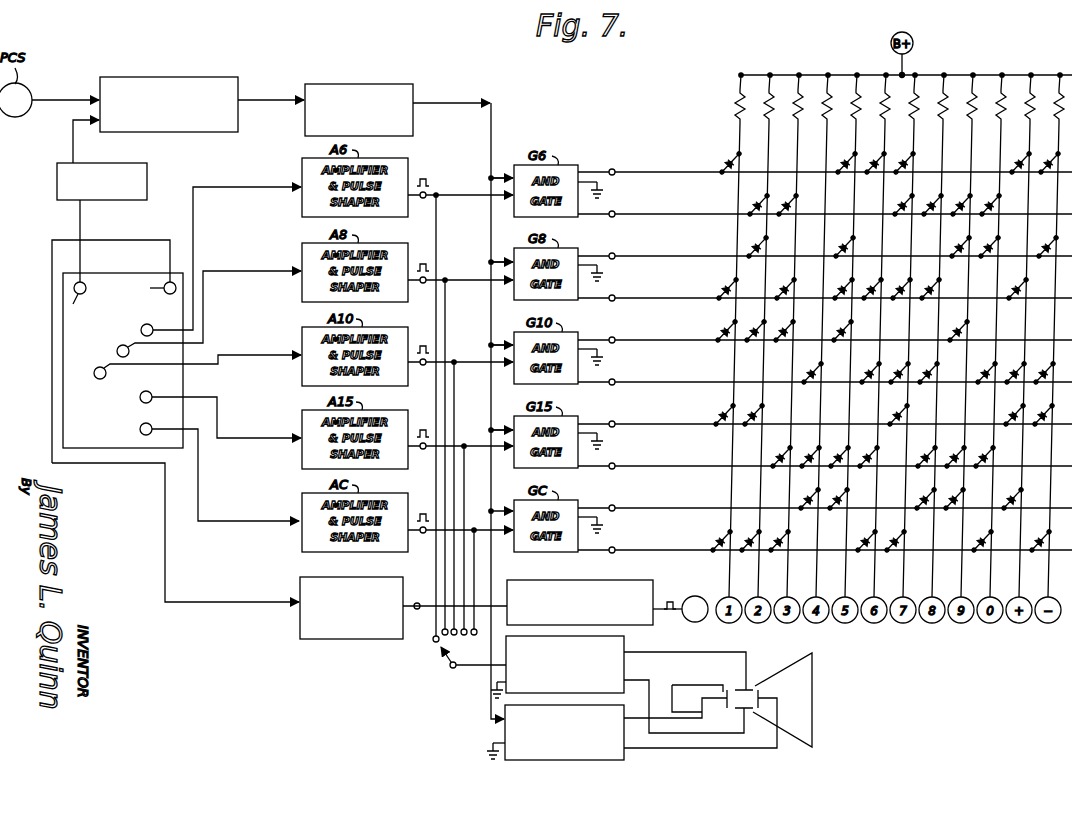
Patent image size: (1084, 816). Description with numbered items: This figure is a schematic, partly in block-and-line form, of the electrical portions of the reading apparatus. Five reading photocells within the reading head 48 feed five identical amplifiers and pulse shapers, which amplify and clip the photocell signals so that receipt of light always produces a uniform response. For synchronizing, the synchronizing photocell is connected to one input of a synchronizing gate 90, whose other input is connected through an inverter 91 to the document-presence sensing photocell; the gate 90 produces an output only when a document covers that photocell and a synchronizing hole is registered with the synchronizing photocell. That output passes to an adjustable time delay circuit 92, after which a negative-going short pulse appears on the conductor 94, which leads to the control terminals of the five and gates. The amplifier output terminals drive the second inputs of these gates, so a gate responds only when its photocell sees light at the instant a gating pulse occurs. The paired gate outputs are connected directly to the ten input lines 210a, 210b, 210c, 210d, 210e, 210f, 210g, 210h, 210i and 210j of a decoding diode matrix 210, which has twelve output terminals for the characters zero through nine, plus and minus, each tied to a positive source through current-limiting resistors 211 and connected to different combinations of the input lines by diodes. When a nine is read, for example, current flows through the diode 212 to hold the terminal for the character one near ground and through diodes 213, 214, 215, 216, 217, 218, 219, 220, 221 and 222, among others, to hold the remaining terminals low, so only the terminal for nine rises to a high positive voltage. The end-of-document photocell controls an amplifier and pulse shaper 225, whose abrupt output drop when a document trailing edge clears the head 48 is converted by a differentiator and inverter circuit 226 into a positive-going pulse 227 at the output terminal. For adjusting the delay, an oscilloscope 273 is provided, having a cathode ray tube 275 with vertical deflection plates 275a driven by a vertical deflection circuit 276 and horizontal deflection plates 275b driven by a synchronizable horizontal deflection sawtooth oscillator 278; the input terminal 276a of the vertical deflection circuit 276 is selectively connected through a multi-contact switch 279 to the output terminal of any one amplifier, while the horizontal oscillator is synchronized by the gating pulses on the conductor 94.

The reading head 48 is at (111, 272).
The synchronizing gate 90 is at (188, 77).
The inverter 91 is at (57, 178).
The adjustable time delay circuit 92 is at (351, 84).
The conductor 94 is at (478, 96).
The decoding diode matrix 210 is at (952, 73).
The input line 210a is at (825, 163).
The input line 210b is at (825, 205).
The input line 210c is at (825, 247).
The input line 210d is at (825, 289).
The input line 210e is at (825, 331).
The input line 210f is at (825, 373).
The input line 210g is at (825, 415).
The input line 210h is at (825, 457).
The input line 210i is at (825, 499).
The input line 210j is at (825, 541).
The current-limiting resistors 211 is at (858, 96).
The diode 212 is at (726, 288).
The diode 213 is at (750, 412).
The diode 214 is at (784, 289).
The diode 215 is at (814, 167).
The diode 216 is at (842, 289).
The diode 217 is at (872, 289).
The diode 218 is at (900, 289).
The diode 219 is at (928, 289).
The diode 220 is at (986, 375).
The diode 221 is at (1015, 375).
The diode 222 is at (1044, 375).
The amplifier and pulse shaper 225 is at (300, 583).
The differentiator and inverter circuit 226 is at (550, 579).
The positive-going pulse 227 is at (670, 600).
The oscilloscope 273 is at (665, 692).
The cathode ray tube 275 is at (777, 665).
The vertical deflection plates 275a is at (744, 688).
The horizontal deflection plates 275b is at (727, 692).
The vertical deflection circuit 276 is at (624, 645).
The input terminal 276a is at (452, 669).
The horizontal deflection sawtooth oscillator 278 is at (505, 730).
The multi-contact switch 279 is at (430, 652).